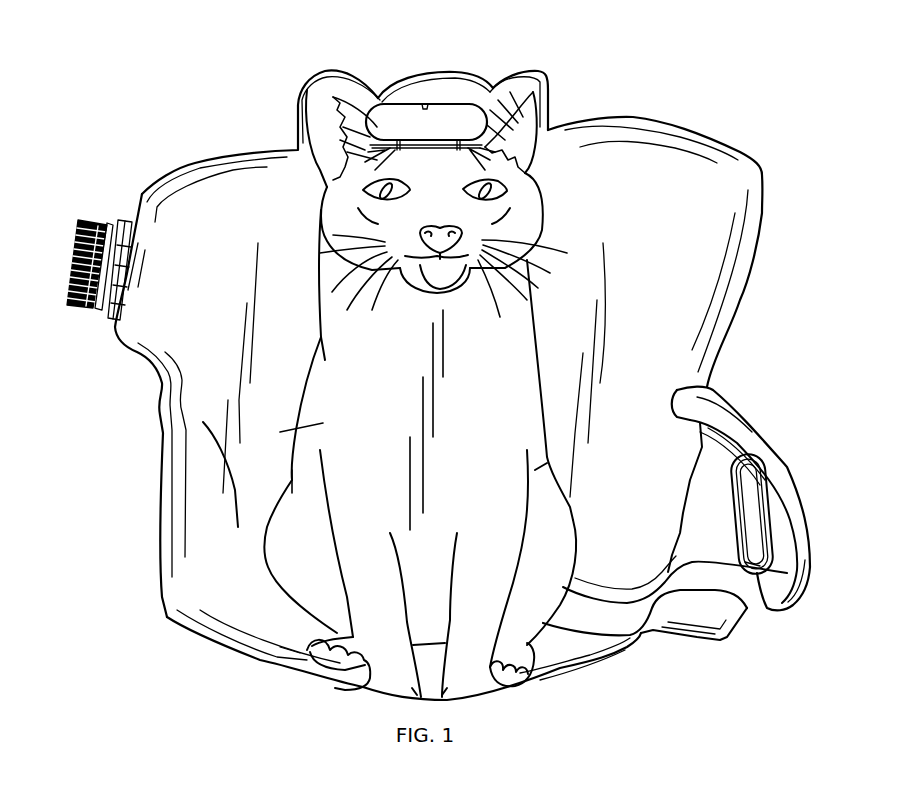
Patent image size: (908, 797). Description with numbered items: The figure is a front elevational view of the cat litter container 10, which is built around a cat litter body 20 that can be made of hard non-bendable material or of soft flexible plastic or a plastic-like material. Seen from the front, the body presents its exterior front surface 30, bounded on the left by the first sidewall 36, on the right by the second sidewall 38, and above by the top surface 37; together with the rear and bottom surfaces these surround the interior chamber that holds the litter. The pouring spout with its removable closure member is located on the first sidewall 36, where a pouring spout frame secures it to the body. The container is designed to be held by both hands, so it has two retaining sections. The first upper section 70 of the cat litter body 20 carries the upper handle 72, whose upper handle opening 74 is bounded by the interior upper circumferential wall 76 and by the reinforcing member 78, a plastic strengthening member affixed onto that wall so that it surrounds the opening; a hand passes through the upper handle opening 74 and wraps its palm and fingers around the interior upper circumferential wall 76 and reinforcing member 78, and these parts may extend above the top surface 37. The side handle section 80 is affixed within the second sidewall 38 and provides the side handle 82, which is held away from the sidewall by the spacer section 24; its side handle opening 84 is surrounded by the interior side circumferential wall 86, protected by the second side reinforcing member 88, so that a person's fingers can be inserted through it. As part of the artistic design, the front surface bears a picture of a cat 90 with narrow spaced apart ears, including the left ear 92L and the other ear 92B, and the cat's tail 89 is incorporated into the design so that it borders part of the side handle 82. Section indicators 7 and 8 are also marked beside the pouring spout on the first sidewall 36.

The cat litter container 10 is at (772, 248).
The cat litter body 20 is at (742, 292).
The spacer section 24 is at (727, 518).
The exterior front surface 30 is at (635, 456).
The first sidewall 36 is at (148, 362).
The top surface 37 is at (663, 127).
The second sidewall 38 is at (763, 193).
The first upper section 70 is at (458, 62).
The upper handle 72 is at (475, 90).
The upper handle opening 74 is at (377, 100).
The interior upper circumferential wall 76 is at (425, 105).
The reinforcing member 78 is at (380, 105).
The side handle section 80 is at (814, 410).
The side handle 82 is at (755, 462).
The side handle opening 84 is at (770, 547).
The interior side circumferential wall 86 is at (748, 513).
The second side reinforcing member 88 is at (757, 574).
The cat's tail 89 is at (787, 597).
The picture of a cat 90 is at (203, 422).
The left ear 92L is at (325, 98).
The right ear hood lobe 92B is at (548, 84).
The section line 7 is at (90, 318).
The section line 8 is at (103, 333).